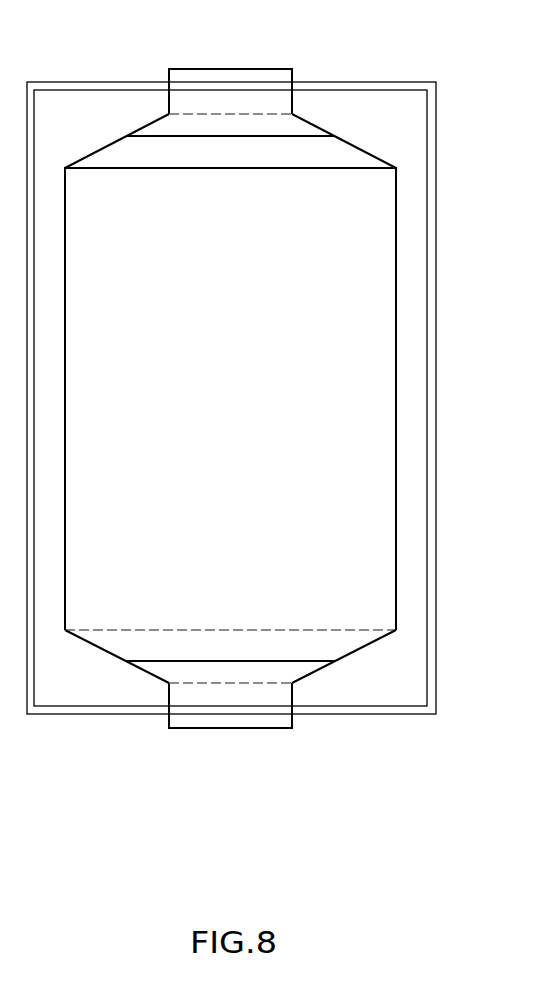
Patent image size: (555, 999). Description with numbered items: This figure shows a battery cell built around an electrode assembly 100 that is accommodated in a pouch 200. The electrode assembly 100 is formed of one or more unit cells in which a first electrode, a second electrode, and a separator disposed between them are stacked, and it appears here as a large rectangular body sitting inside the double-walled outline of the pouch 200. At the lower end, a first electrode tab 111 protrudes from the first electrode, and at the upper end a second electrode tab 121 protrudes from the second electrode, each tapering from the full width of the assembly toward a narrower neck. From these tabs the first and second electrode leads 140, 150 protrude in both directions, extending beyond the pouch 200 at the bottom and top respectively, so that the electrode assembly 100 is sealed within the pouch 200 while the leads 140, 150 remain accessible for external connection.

The electrode assembly 100 is at (404, 238).
The first electrode tab 111 is at (335, 651).
The second electrode tab 121 is at (360, 158).
The first electrode lead 140 is at (234, 710).
The second electrode lead 150 is at (232, 78).
The pouch 200 is at (434, 407).